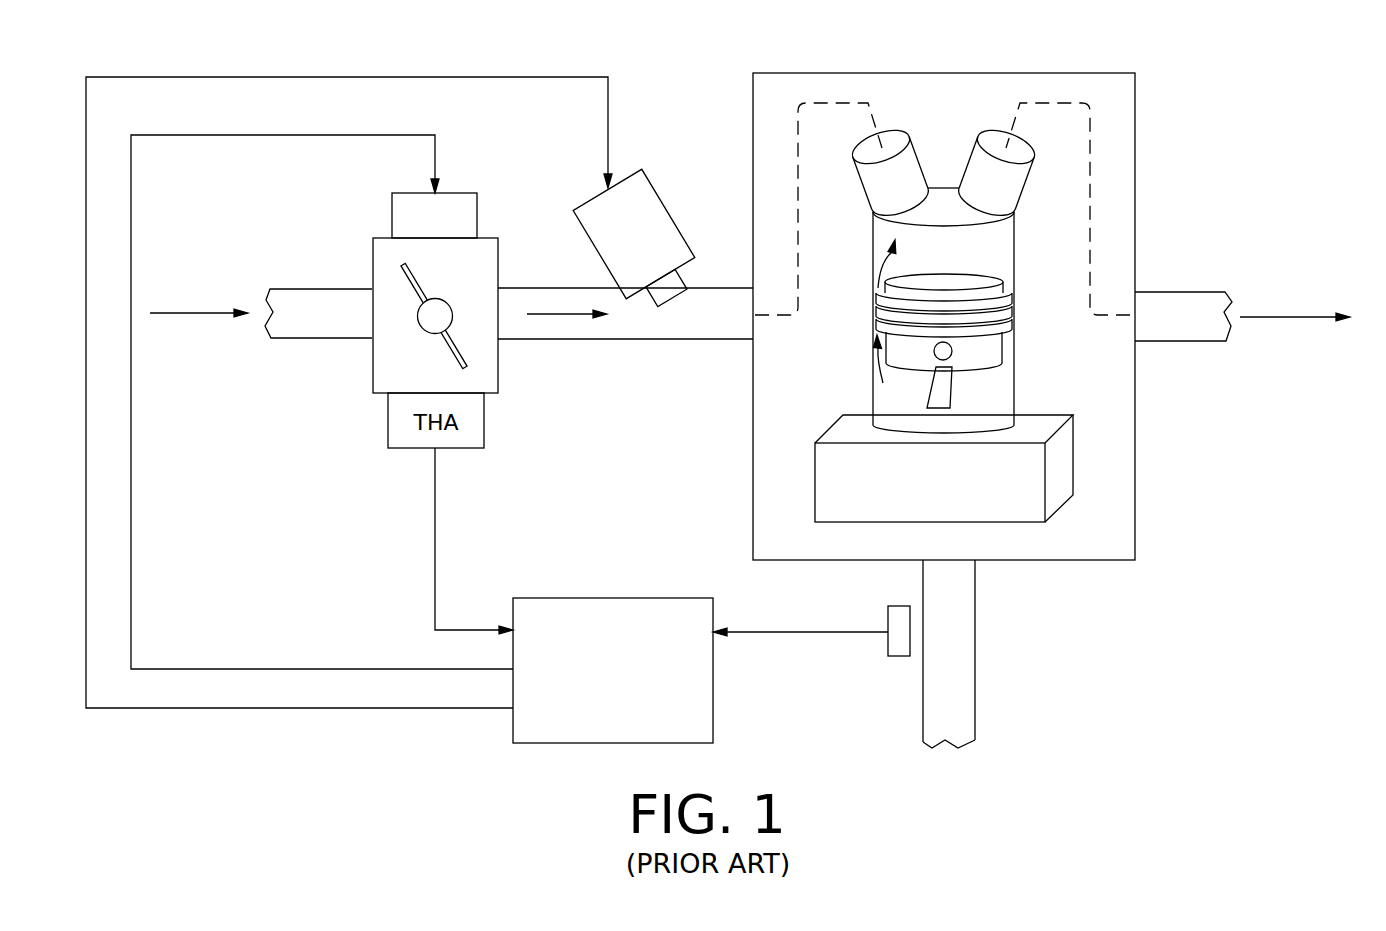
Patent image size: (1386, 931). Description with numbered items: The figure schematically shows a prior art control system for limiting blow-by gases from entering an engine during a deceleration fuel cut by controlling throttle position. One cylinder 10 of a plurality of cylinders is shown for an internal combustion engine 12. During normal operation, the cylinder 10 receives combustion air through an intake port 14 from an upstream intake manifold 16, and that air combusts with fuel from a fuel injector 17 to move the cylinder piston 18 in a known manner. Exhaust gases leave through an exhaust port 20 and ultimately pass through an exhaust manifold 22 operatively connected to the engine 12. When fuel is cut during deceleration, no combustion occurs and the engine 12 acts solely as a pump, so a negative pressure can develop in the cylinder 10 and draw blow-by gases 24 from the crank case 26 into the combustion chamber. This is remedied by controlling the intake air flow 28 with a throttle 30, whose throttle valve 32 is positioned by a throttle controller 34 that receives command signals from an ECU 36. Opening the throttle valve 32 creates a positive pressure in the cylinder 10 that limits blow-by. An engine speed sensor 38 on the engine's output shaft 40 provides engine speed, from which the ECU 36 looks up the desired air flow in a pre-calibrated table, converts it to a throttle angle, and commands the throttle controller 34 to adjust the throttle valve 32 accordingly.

The cylinder 10 is at (985, 250).
The internal combustion engine 12 is at (1060, 560).
The intake port 14 is at (907, 180).
The intake manifold 16 is at (628, 333).
The fuel injector 17 is at (650, 200).
The cylinder piston 18 is at (993, 344).
The exhaust port 20 is at (975, 180).
The exhaust manifold 22 is at (1182, 336).
The blow-by gases 24 is at (885, 261).
The crank case 26 is at (1060, 463).
The intake air flow 28 is at (566, 308).
The throttle 30 is at (372, 355).
The throttle valve 32 is at (463, 350).
The throttle controller 34 is at (457, 192).
The ECU 36 is at (578, 744).
The engine speed sensor 38 is at (895, 657).
The output shaft 40 is at (963, 652).